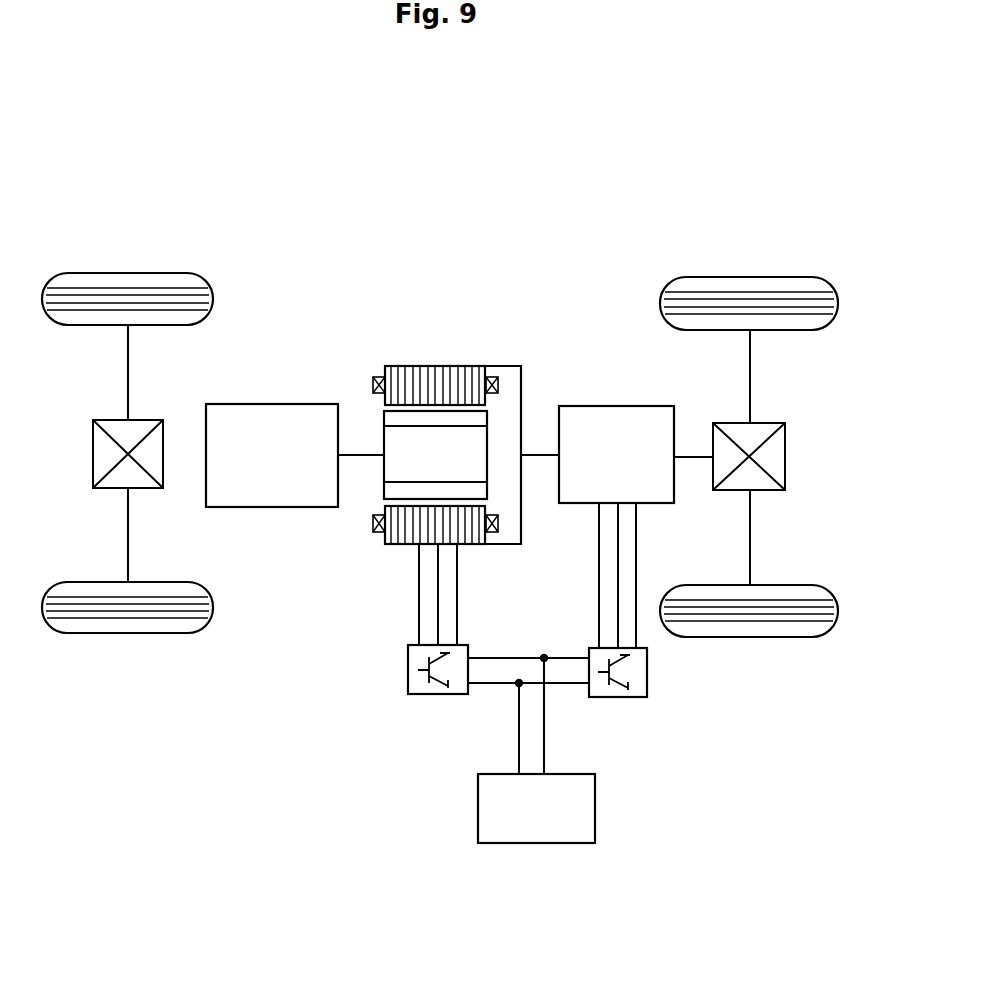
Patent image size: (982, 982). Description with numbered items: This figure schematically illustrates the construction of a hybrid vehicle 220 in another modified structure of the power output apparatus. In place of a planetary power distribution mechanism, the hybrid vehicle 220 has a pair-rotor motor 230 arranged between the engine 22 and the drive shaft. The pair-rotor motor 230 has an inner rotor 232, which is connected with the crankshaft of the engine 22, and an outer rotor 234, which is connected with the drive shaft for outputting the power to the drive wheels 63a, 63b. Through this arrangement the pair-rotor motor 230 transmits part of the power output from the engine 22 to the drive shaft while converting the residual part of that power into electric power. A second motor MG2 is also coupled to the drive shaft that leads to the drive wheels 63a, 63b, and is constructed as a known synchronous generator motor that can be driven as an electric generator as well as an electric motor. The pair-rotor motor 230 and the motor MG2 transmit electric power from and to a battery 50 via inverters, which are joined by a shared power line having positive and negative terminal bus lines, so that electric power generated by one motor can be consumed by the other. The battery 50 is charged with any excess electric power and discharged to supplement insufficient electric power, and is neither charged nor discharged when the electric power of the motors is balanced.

The hybrid vehicle 220 is at (508, 162).
The pair-rotor motor 230 is at (368, 225).
The inner rotor 232 is at (384, 437).
The outer rotor 234 is at (438, 366).
The motor MG2 is at (617, 406).
The engine 22 is at (272, 507).
The battery 50 is at (595, 801).
The drive wheel 63a is at (750, 278).
The drive wheel 63b is at (750, 635).